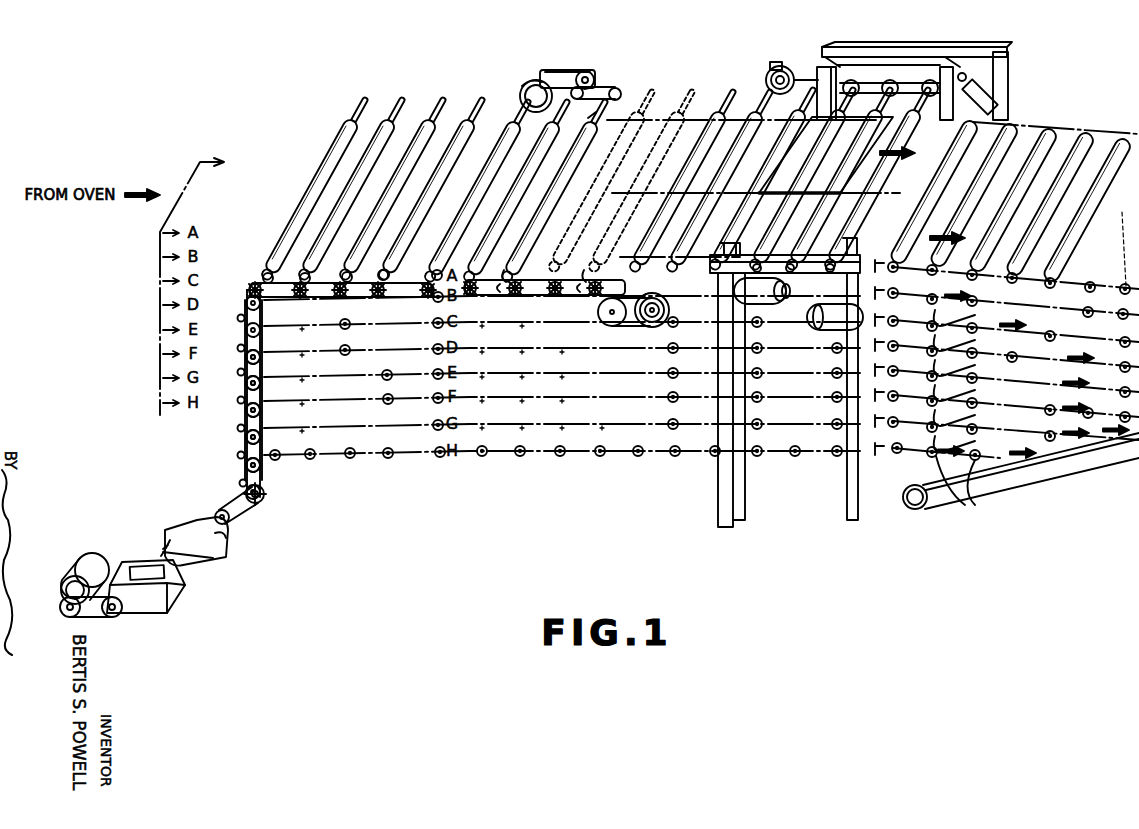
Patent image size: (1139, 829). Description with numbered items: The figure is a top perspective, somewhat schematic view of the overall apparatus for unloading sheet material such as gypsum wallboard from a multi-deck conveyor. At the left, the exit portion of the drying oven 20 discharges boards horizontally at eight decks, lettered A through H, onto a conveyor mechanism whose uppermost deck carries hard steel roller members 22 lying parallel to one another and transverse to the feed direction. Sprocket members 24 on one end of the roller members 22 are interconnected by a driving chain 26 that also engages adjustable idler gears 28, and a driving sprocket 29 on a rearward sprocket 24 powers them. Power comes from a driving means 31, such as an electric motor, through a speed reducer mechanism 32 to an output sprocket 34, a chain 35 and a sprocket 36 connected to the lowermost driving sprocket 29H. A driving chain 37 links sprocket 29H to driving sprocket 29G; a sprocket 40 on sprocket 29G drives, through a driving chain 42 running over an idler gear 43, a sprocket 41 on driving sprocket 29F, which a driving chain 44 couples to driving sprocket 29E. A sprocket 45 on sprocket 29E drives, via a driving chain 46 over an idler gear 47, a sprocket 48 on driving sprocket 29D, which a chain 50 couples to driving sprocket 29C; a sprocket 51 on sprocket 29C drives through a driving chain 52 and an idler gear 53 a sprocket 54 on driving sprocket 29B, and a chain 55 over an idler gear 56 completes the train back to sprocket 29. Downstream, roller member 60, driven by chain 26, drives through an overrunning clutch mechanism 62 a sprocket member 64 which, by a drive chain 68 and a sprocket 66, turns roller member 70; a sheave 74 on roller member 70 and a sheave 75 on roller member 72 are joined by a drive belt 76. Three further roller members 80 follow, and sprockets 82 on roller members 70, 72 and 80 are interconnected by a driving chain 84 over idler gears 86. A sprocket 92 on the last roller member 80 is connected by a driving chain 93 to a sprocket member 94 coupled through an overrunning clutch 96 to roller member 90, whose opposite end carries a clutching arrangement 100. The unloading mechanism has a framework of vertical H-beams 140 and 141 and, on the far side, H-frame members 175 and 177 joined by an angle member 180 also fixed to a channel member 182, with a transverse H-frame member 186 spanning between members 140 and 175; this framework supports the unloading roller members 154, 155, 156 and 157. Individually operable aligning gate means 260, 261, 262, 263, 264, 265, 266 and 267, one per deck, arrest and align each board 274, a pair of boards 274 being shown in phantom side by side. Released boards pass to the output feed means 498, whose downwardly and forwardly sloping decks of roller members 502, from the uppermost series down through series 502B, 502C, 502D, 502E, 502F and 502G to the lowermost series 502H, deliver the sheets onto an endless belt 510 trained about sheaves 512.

The exit portion of drying oven 20 is at (185, 170).
The roller members 22 is at (358, 173).
The sprocket members 24 is at (264, 280).
The driving chain 26 is at (419, 298).
The idler gears 28 is at (280, 276).
The driving sprocket 29 is at (248, 294).
The driving sprocket 29B is at (262, 331).
The driving sprocket 29C is at (262, 358).
The driving sprocket 29D is at (262, 384).
The driving sprocket 29E is at (262, 411).
The driving sprocket 29F is at (262, 438).
The driving sprocket 29G is at (262, 466).
The driving sprocket 29H is at (264, 498).
The power driving means 31 is at (126, 546).
The speed reducer mechanism 32 is at (186, 512).
The output sprocket 34 is at (228, 524).
The chain 35 is at (243, 518).
The sprocket 36 is at (262, 506).
The driving chain 37 is at (243, 484).
The sprocket 40 is at (264, 492).
The sprocket 41 is at (246, 439).
The driving chain 42 is at (246, 466).
The idler gear 43 is at (238, 456).
The driving chain 44 is at (270, 426).
The sprocket 45 is at (238, 429).
The driving chain 46 is at (246, 412).
The idler gear 47 is at (238, 401).
The sprocket 48 is at (246, 384).
The chain 50 is at (270, 370).
The sprocket 51 is at (238, 374).
The driving chain 52 is at (246, 359).
The idler gear 53 is at (238, 348).
The sprocket 54 is at (238, 318).
The chain 55 is at (266, 312).
The idler gear 56 is at (246, 304).
The roller member 60 is at (498, 172).
The overrunning clutch mechanism 62 is at (524, 82).
The sprocket member 64 is at (550, 68).
The sprocket 66 is at (588, 90).
The drive chain 68 is at (586, 72).
The roller member 70 is at (542, 175).
The roller member 72 is at (580, 182).
The sheave 74 is at (599, 82).
The sheave 75 is at (622, 92).
The drive belt 76 is at (590, 118).
The roller members 80 is at (704, 127).
The sprockets 82 is at (510, 296).
The driving chain 84 is at (560, 296).
The idler gears 86 is at (544, 269).
The roller member 90 is at (728, 180).
The sprocket 92 is at (610, 328).
The driving chain 93 is at (632, 328).
The sprocket member 94 is at (650, 328).
The overrunning clutch 96 is at (670, 300).
The clutching arrangement 100 is at (764, 62).
The H-beam 140 is at (728, 530).
The H-beam 141 is at (848, 527).
The roller member 154 is at (786, 150).
The roller member 155 is at (784, 205).
The roller member 156 is at (830, 205).
The roller member 157 is at (868, 205).
The H-frame member 175 is at (822, 64).
The H-frame member 177 is at (958, 64).
The angle member 180 is at (850, 46).
The channel member 182 is at (1010, 62).
The cross frame member 186 is at (732, 245).
The aligning gate means 260 is at (882, 266).
The aligning gate means 261 is at (880, 292).
The aligning gate means 262 is at (882, 318).
The aligning gate means 263 is at (882, 343).
The aligning gate means 264 is at (882, 369).
The aligning gate means 265 is at (882, 393).
The aligning gate means 266 is at (884, 419).
The aligning gate means 267 is at (884, 452).
The wallboard 274 is at (612, 196).
The output feed means 498 is at (1066, 104).
The roller members 502 is at (1000, 152).
The roller members 502B is at (970, 305).
The roller members 502C is at (970, 330).
The roller members 502D is at (970, 355).
The roller members 502E is at (970, 380).
The roller members 502F is at (970, 404).
The roller members 502G is at (970, 430).
The roller members 502H is at (976, 485).
The endless belt 510 is at (1064, 480).
The sheaves 512 is at (924, 508).